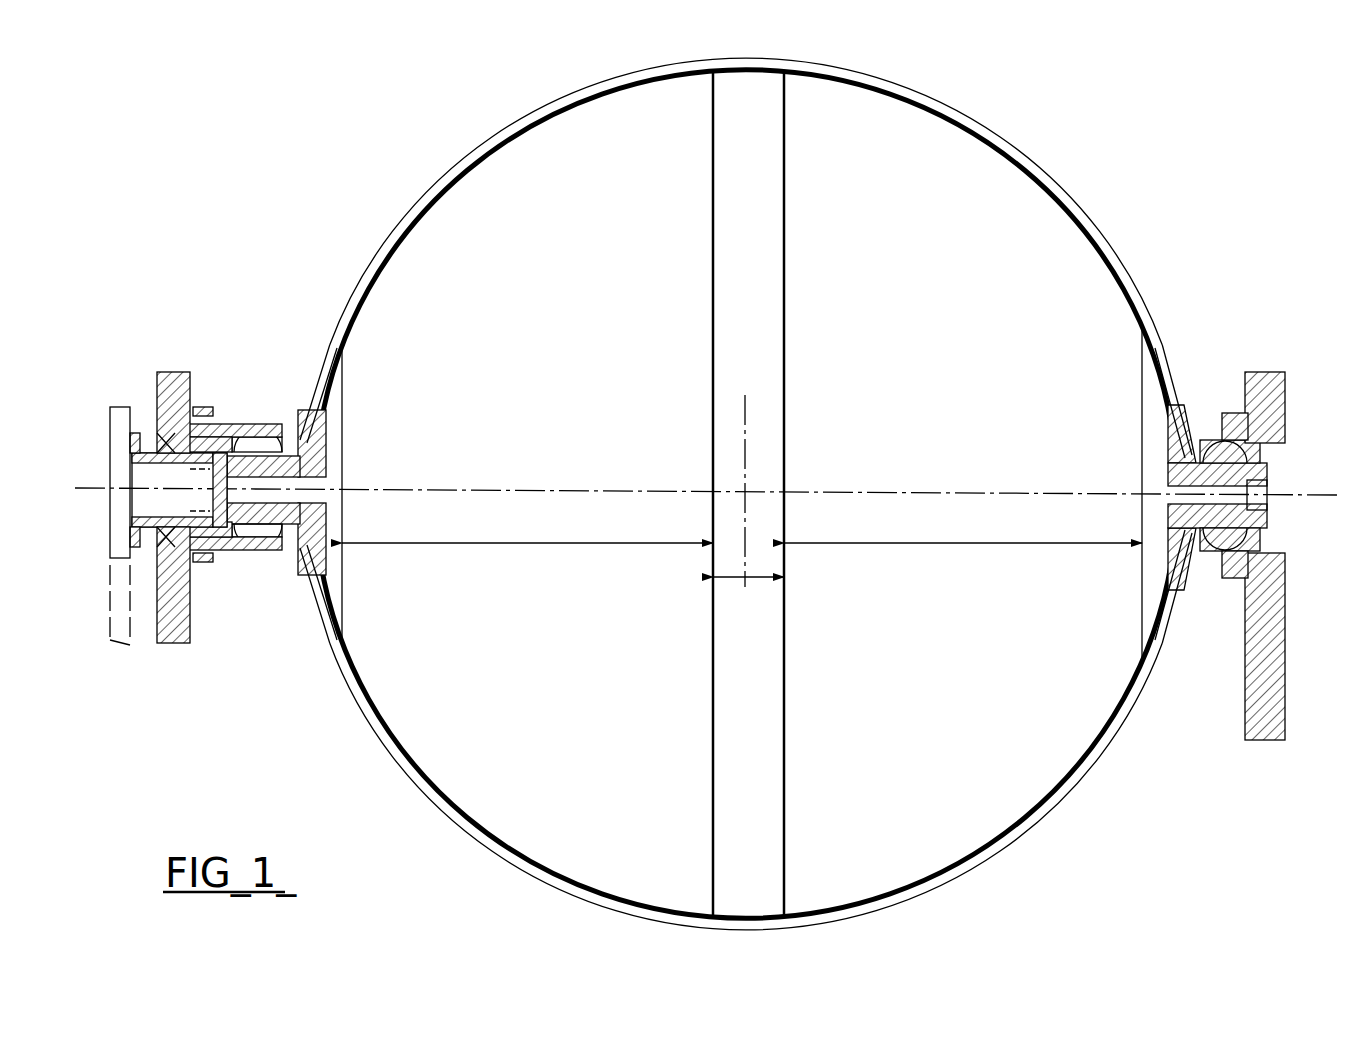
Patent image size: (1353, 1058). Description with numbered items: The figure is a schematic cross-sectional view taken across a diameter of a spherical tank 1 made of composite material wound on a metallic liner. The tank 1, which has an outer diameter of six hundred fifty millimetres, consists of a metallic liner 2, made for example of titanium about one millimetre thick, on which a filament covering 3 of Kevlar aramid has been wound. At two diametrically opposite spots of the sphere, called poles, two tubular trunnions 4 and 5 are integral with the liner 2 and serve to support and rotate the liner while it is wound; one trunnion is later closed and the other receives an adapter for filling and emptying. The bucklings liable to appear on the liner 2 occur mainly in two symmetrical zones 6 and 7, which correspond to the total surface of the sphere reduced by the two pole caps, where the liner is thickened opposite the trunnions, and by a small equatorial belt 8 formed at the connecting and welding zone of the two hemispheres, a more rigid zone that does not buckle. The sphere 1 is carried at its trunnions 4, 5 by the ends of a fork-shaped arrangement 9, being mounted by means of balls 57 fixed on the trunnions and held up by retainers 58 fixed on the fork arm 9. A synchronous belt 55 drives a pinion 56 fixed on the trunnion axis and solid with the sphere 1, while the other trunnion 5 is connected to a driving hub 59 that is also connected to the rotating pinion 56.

The spherical tank 1 is at (418, 172).
The metallic liner 2 is at (382, 272).
The filament covering 3 is at (391, 240).
The tubular trunnion 4 is at (1186, 476).
The tubular trunnion 5 is at (296, 466).
The buckling zone 6 is at (963, 531).
The buckling zone 7 is at (527, 529).
The equatorial belt 8 is at (748, 563).
The fork-shaped arrangement 9 is at (195, 622).
The synchronous belt 55 is at (122, 636).
The pinion 56 is at (124, 480).
The balls 57 is at (248, 448).
The retainers 58 is at (247, 553).
The driving hub 59 is at (198, 525).